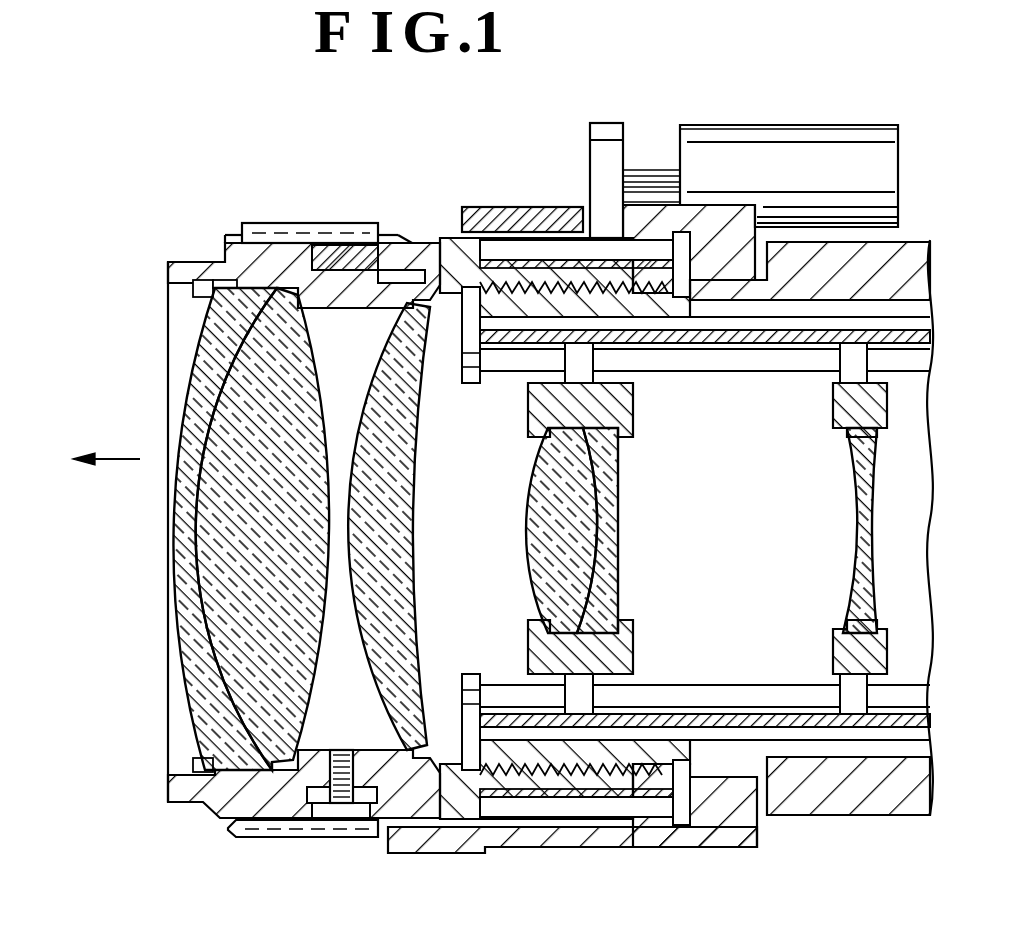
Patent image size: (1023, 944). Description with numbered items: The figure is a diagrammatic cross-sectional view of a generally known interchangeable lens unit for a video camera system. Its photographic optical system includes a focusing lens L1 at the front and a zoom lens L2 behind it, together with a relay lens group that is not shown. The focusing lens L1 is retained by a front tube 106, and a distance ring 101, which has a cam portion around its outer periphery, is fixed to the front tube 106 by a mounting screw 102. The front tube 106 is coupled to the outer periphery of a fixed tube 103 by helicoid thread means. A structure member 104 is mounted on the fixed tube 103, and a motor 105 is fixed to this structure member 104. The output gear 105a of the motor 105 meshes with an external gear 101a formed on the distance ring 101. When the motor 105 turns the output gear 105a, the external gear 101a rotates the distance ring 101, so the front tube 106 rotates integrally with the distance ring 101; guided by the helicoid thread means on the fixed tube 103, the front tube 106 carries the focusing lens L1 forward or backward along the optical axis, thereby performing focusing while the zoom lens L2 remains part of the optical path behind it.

The distance ring 101 is at (432, 245).
The external gear 101a is at (567, 247).
The mounting screw 102 is at (340, 810).
The fixed tube 103 is at (830, 745).
The structure member 104 is at (905, 273).
The motor 105 is at (736, 158).
The output gear 105a is at (606, 153).
The front tube 106 is at (260, 793).
The focusing lens group L1 is at (247, 388).
The zoom lens group L2 is at (570, 482).